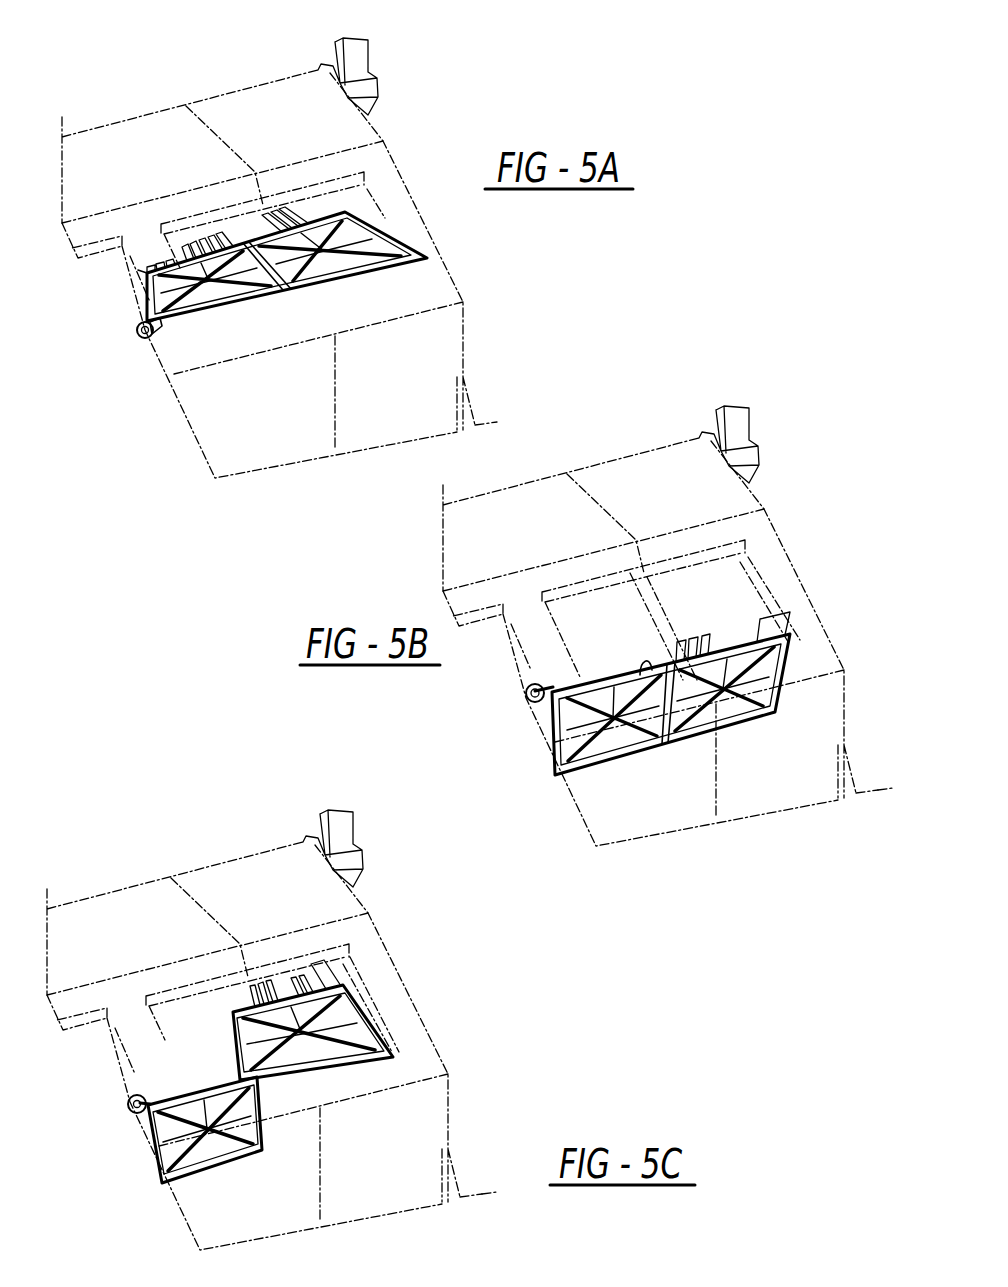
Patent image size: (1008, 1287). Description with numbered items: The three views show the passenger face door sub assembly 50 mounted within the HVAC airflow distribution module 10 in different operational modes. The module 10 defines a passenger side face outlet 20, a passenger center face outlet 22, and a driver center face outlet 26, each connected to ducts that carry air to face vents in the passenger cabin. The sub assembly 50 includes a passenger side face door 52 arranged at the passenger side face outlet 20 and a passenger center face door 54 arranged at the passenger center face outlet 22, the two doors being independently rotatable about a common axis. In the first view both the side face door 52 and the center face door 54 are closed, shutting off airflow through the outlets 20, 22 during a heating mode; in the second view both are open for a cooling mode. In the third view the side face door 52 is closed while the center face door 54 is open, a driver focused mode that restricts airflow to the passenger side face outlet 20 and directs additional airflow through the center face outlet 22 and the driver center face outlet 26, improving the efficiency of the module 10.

In FIG. 5A, the HVAC airflow distribution module 10 is at (84, 92).
In FIG. 5B, the HVAC airflow distribution module 10 is at (818, 446).
In FIG. 5C, the HVAC airflow distribution module 10 is at (92, 878).
In FIG. 5A, the passenger side face outlet 20 is at (342, 187).
In FIG. 5B, the passenger side face outlet 20 is at (743, 563).
In FIG. 5C, the passenger side face outlet 20 is at (332, 963).
In FIG. 5A, the passenger center face outlet 22 is at (223, 218).
In FIG. 5B, the passenger center face outlet 22 is at (607, 587).
In FIG. 5C, the passenger center face outlet 22 is at (207, 997).
In FIG. 5A, the driver center face outlet 26 is at (105, 250).
In FIG. 5B, the driver center face outlet 26 is at (485, 617).
In FIG. 5C, the driver center face outlet 26 is at (133, 1080).
In FIG. 5A, the passenger face door sub assembly 50 is at (327, 227).
In FIG. 5B, the passenger face door sub assembly 50 is at (694, 756).
In FIG. 5C, the passenger face door sub assembly 50 is at (282, 1097).
In FIG. 5A, the passenger side face door 52 is at (382, 258).
In FIG. 5B, the passenger side face door 52 is at (747, 672).
In FIG. 5C, the passenger side face door 52 is at (330, 1047).
In FIG. 5A, the passenger center face door 54 is at (168, 298).
In FIG. 5B, the passenger center face door 54 is at (557, 774).
In FIG. 5C, the passenger center face door 54 is at (188, 1152).